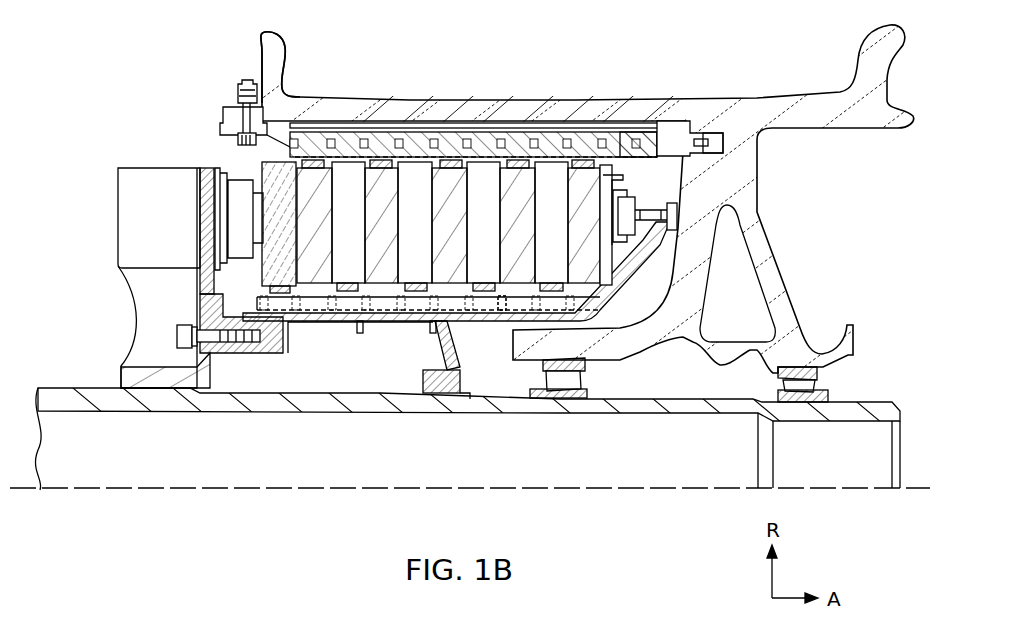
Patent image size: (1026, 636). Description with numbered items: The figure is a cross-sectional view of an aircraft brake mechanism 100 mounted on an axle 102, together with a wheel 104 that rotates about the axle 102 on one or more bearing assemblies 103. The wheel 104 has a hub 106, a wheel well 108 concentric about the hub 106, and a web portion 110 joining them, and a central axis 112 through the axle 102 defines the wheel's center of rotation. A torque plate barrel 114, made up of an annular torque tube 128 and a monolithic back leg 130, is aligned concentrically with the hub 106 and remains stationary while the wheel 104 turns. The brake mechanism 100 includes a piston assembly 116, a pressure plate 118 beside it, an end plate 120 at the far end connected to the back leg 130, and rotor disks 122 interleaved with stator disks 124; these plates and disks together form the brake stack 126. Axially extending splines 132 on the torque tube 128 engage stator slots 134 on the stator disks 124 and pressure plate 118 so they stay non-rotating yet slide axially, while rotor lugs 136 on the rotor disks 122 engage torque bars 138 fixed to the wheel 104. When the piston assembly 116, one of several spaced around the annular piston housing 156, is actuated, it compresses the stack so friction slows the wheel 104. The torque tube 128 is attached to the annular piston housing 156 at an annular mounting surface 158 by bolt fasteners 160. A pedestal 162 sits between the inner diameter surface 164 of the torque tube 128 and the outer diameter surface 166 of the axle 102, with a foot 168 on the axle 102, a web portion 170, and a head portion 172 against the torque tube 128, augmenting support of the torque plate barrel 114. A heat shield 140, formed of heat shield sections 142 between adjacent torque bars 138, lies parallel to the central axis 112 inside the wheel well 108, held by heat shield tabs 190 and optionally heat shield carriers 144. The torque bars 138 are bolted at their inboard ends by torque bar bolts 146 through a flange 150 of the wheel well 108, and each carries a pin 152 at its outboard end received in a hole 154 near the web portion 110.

The brake mechanism 100 is at (125, 80).
The axle 102 is at (665, 412).
The bearing assemblies 103 is at (810, 384).
The wheel 104 is at (768, 208).
The hub 106 is at (568, 344).
The wheel well 108 is at (682, 100).
The web portion 110 is at (774, 256).
The central axis 112 is at (636, 489).
The torque plate barrel 114 is at (332, 327).
The piston assembly 116 is at (186, 155).
The pressure plate 118 is at (262, 168).
The end plate 120 is at (624, 176).
The rotor disks 122 is at (317, 175).
The stator disks 124 is at (415, 168).
The brake stack 126 is at (523, 180).
The torque tube 128 is at (302, 322).
The back leg 130 is at (456, 271).
The splines 132 is at (248, 310).
The stator slots 134 is at (532, 305).
The rotor lugs 136 is at (363, 148).
The torque bars 138 is at (623, 147).
The heat shield 140 is at (447, 126).
The heat shield sections 142 is at (517, 130).
The heat shield carriers 144 is at (280, 120).
The torque bar bolts 146 is at (247, 80).
The flange 150 is at (230, 110).
The pin 152 is at (685, 140).
The hole 154 is at (710, 136).
The annular piston housing 156 is at (118, 170).
The annular mounting surface 158 is at (254, 356).
The bolt fasteners 160 is at (178, 336).
The pedestal 162 is at (434, 343).
The inner diameter surface 164 is at (360, 322).
The outer diameter surface 166 is at (460, 393).
The foot 168 is at (463, 367).
The web portion 170 is at (430, 365).
The head portion 172 is at (433, 322).
The heat shield tabs 190 is at (668, 162).